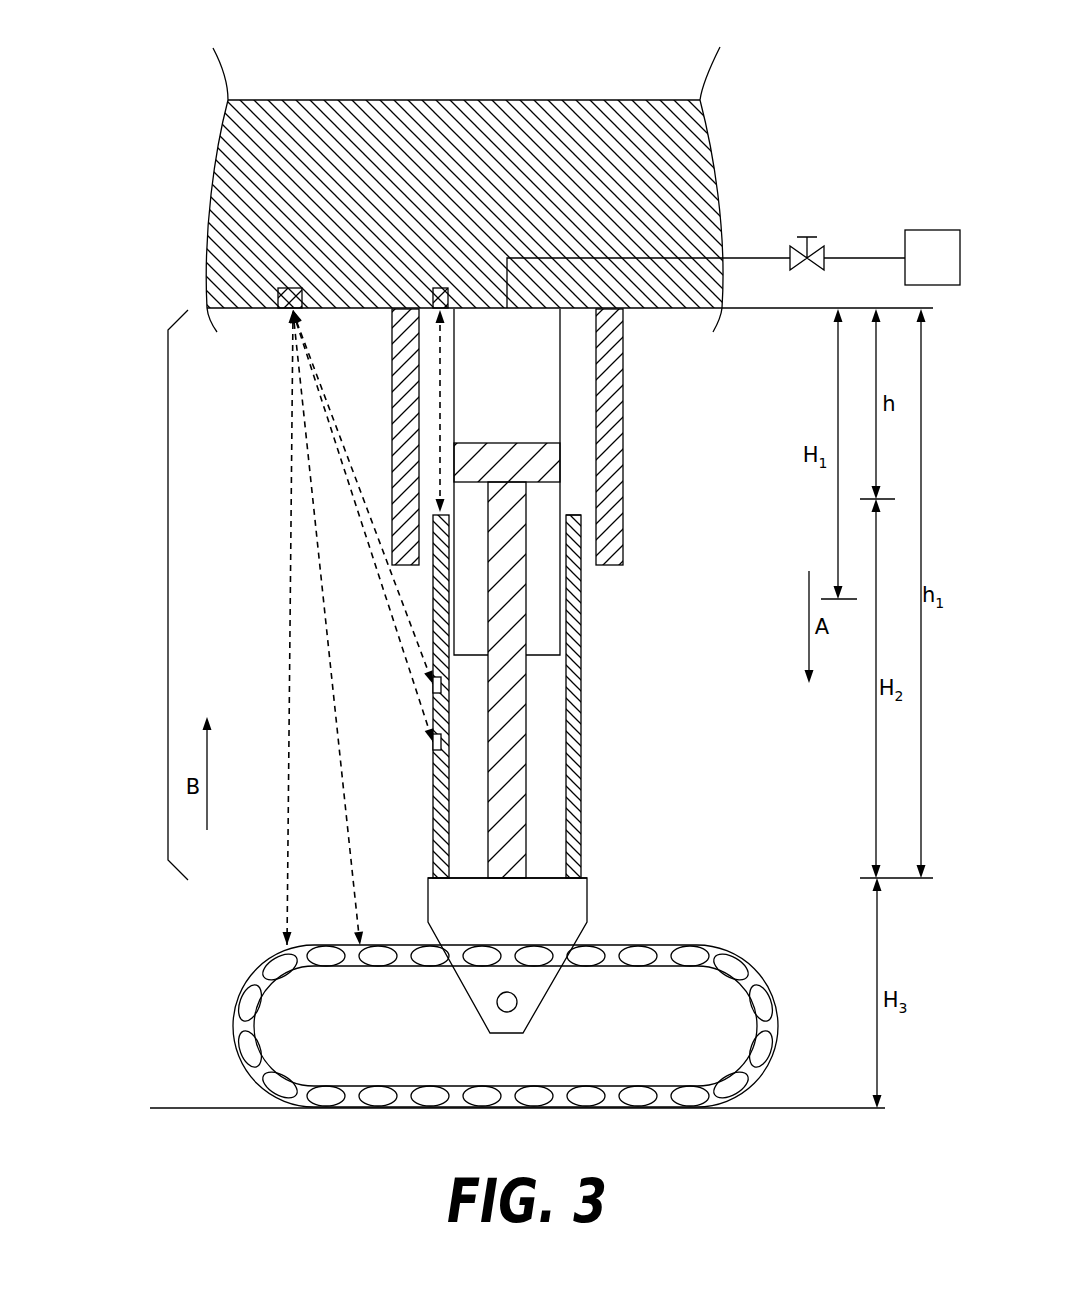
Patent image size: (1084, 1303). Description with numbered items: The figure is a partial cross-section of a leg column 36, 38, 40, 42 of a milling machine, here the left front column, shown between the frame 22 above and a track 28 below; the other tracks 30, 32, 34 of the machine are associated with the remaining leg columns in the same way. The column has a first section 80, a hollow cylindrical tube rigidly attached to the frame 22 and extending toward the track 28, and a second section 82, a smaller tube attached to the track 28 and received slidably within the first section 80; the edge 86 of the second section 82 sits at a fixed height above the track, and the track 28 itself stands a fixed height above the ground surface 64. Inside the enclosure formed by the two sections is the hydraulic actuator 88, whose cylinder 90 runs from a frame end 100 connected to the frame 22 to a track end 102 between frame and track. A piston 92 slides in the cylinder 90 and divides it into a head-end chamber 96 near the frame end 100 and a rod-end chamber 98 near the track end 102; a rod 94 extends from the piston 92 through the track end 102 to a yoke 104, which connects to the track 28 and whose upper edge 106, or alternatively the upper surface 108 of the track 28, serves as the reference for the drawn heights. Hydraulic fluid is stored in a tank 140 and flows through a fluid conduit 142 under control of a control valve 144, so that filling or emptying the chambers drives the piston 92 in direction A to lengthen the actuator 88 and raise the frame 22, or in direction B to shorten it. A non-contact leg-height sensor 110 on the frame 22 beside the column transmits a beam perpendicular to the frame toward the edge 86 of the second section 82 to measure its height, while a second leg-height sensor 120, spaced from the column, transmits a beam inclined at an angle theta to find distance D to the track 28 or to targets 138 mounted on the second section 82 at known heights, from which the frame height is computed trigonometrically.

The frame 22 is at (504, 219).
The track 28 is at (552, 1026).
The left rear track 30 is at (552, 1026).
The left rear track 32 is at (552, 1026).
The right rear track 34 is at (782, 1023).
The leg column 36 is at (114, 595).
The right front leg column 38 is at (114, 595).
The left rear leg column 40 is at (114, 595).
The right rear leg column 42 is at (168, 602).
The ground surface 64 is at (797, 1108).
The first section 80 is at (612, 397).
The second section 82 is at (577, 797).
The edge 86 is at (567, 517).
The actuator 88 is at (568, 347).
The cylinder 90 is at (560, 420).
The piston 92 is at (540, 463).
The rod 94 is at (515, 748).
The head-end chamber 96 is at (498, 389).
The rod-end chamber 98 is at (477, 605).
The frame end 100 is at (536, 297).
The track end 102 is at (545, 662).
The yoke 104 is at (578, 903).
The upper edge 106 is at (550, 878).
The upper surface 108 is at (552, 997).
The non-contact leg-height sensor 110 is at (432, 293).
The non-contact leg-height sensor 120 is at (278, 300).
The target 138 is at (433, 686).
The tank 140 is at (918, 268).
The fluid conduit 142 is at (743, 257).
The control valve 144 is at (810, 236).